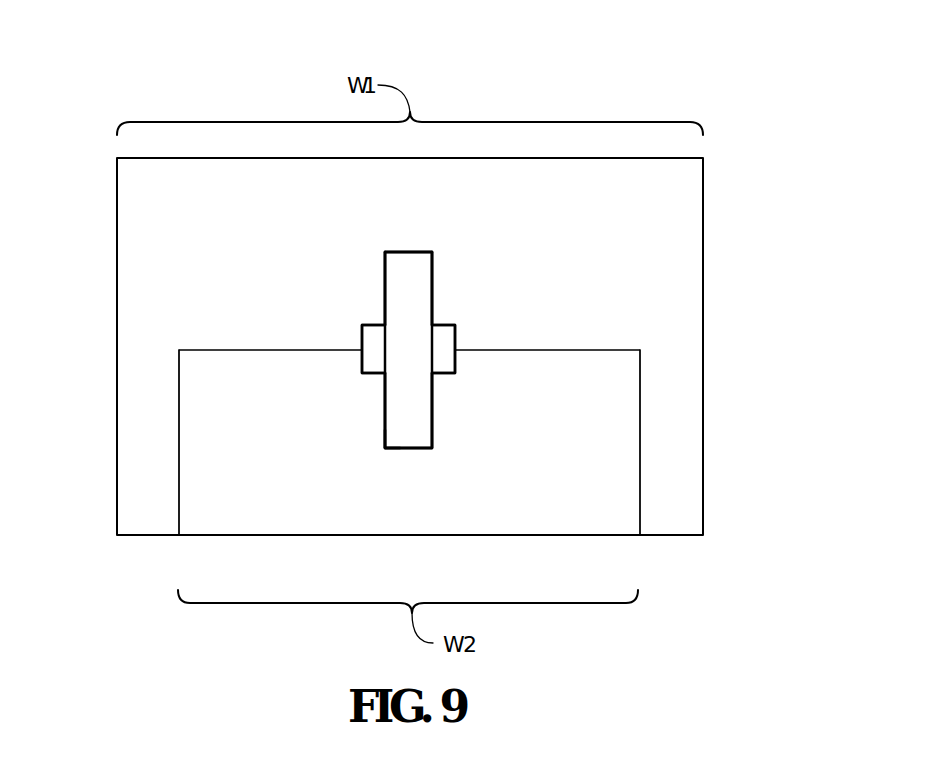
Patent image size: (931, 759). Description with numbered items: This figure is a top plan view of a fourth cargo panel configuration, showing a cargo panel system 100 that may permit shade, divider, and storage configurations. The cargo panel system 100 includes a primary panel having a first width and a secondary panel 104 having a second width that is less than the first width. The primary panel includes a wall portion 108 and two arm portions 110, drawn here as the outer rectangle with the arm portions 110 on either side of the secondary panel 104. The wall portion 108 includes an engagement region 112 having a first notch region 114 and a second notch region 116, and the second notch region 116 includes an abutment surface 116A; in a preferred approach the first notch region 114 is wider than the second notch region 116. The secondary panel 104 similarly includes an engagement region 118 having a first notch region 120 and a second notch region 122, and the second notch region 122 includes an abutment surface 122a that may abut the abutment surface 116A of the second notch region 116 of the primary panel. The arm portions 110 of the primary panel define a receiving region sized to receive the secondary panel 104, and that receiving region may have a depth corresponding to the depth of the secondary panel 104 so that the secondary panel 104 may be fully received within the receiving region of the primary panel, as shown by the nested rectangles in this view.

The cargo panel system 100 is at (228, 80).
The secondary panel 104 is at (603, 428).
The wall portion 108 is at (170, 212).
The arm portions 110 is at (148, 447).
The engagement region 112 is at (407, 328).
The first notch region 114 is at (443, 342).
The second notch region 116 is at (407, 277).
The abutment surface 116A is at (405, 253).
The engagement region 118 is at (410, 375).
The first notch region 120 is at (362, 362).
The second notch region 122 is at (385, 418).
The abutment surface 122a is at (385, 440).